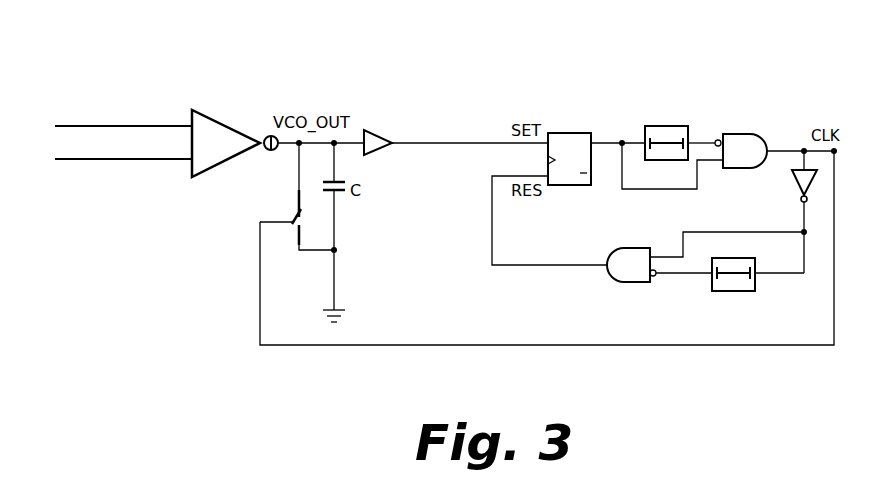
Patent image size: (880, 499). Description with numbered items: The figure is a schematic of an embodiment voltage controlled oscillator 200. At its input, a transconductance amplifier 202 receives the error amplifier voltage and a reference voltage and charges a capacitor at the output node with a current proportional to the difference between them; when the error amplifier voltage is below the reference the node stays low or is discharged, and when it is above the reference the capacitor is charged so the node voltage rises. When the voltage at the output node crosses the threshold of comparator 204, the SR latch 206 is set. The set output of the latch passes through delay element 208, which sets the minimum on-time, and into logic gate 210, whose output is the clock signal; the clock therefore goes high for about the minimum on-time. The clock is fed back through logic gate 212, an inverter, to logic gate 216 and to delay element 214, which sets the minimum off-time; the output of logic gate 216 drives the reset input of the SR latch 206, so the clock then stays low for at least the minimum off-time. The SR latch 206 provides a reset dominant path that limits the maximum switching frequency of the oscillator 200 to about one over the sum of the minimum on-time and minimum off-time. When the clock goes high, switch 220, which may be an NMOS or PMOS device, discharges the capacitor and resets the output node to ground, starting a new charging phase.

The oscillator 200 is at (136, 66).
The transconductance amplifier 202 is at (208, 118).
The comparator 204 is at (380, 130).
The SR latch 206 is at (561, 132).
The delay element 208 is at (684, 124).
The logic gate 210 is at (745, 133).
The logic gate 212 is at (793, 184).
The delay element 214 is at (728, 292).
The logic gate 216 is at (628, 248).
The switch 220 is at (296, 210).